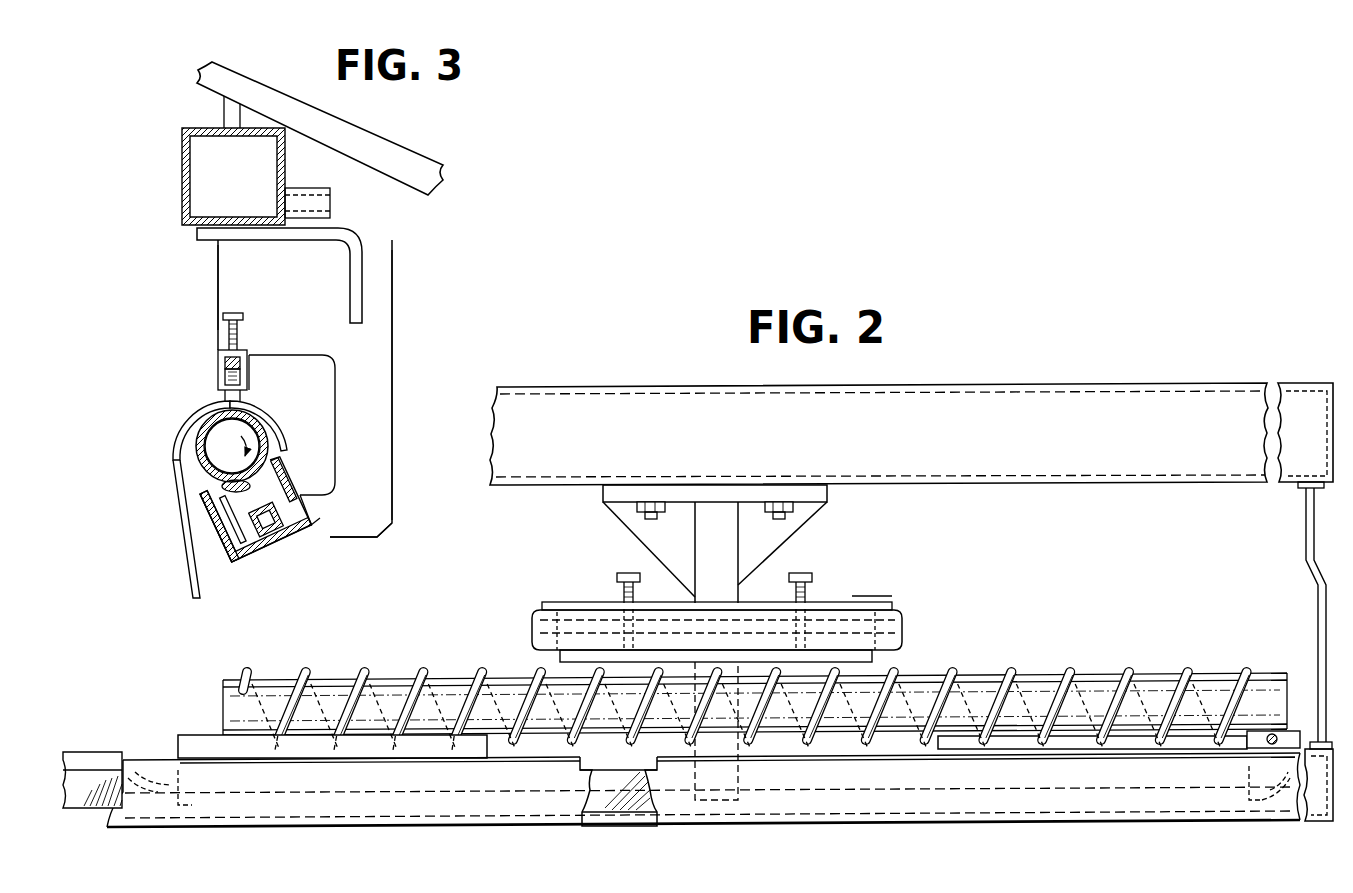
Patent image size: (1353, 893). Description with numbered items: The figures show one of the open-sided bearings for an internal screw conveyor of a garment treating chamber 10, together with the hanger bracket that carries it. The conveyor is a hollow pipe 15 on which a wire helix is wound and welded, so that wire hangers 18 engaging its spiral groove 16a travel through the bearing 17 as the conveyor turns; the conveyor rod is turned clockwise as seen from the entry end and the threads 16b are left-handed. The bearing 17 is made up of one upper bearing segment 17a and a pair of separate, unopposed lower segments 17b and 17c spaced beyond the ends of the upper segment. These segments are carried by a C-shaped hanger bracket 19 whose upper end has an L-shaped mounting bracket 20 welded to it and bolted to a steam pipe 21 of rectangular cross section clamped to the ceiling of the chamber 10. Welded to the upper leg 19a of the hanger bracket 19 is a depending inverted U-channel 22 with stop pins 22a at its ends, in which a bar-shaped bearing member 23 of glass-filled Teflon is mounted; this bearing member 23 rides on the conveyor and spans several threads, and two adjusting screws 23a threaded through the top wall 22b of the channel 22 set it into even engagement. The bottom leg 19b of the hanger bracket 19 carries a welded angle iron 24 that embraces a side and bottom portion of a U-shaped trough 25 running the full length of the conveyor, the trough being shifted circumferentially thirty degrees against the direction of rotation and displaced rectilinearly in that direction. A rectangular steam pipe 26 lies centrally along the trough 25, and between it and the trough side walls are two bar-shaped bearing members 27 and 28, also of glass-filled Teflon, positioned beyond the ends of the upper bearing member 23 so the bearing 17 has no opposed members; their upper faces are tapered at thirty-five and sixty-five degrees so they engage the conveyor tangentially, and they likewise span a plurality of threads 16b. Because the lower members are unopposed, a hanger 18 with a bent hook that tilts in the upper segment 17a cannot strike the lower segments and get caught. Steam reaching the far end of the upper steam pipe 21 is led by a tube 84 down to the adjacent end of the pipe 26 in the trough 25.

In FIG. 3, the treating oven or chamber 10 is at (422, 157).
In FIG. 3, the hollow pipe 15 is at (266, 452).
In FIG. 2, the hollow pipe 15 is at (1155, 682).
In FIG. 2, the spiral groove 16a is at (418, 646).
In FIG. 3, the threads 16b is at (262, 432).
In FIG. 2, the threads 16b is at (313, 680).
In FIG. 3, the bearing 17 is at (396, 325).
In FIG. 3, the upper bearing segment 17a is at (218, 397).
In FIG. 2, the upper bearing segment 17a is at (853, 594).
In FIG. 3, the lower bearing segment 17b is at (196, 492).
In FIG. 2, the lower bearing segment 17b is at (233, 727).
In FIG. 2, the lower bearing segment 17c is at (1238, 744).
In FIG. 3, the wire hanger 18 is at (190, 548).
In FIG. 3, the hanger bracket 19 is at (385, 400).
In FIG. 2, the hanger bracket 19 is at (728, 553).
In FIG. 3, the upper leg 19a is at (237, 273).
In FIG. 3, the bottom leg 19b is at (350, 538).
In FIG. 3, the L-shaped mounting bracket 20 is at (345, 232).
In FIG. 2, the L-shaped mounting bracket 20 is at (820, 491).
In FIG. 3, the steam pipe 21 is at (242, 174).
In FIG. 2, the steam pipe 21 is at (902, 448).
In FIG. 3, the inverted U-channel 22 is at (218, 368).
In FIG. 2, the inverted U-channel 22 is at (902, 627).
In FIG. 2, the stop pin 22a is at (548, 625).
In FIG. 3, the top wall 22b is at (240, 356).
In FIG. 2, the top wall 22b is at (590, 606).
In FIG. 3, the bearing member 23 is at (237, 380).
In FIG. 2, the bearing member 23 is at (560, 656).
In FIG. 3, the adjusting screw 23a is at (244, 316).
In FIG. 2, the adjusting screw 23a is at (628, 573).
In FIG. 3, the angle iron 24 is at (317, 522).
In FIG. 3, the U-shaped trough 25 is at (240, 566).
In FIG. 2, the U-shaped trough 25 is at (140, 828).
In FIG. 3, the steam pipe 26 is at (278, 540).
In FIG. 2, the steam pipe 26 is at (124, 728).
In FIG. 3, the bearing member 27 is at (212, 509).
In FIG. 2, the bearing member 27 is at (364, 765).
In FIG. 3, the bearing member 28 is at (290, 485).
In FIG. 2, the tube 84 is at (1306, 553).